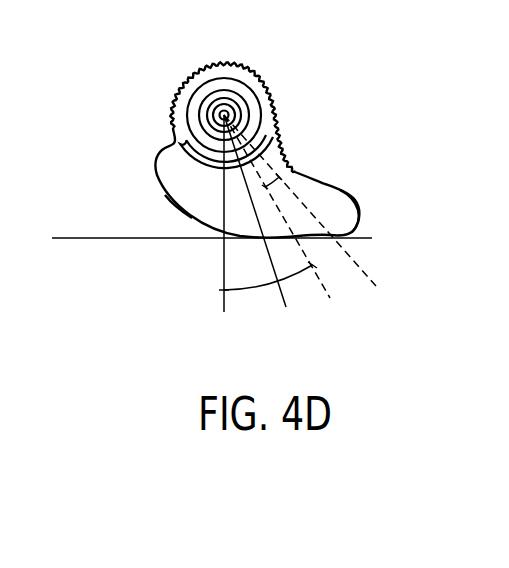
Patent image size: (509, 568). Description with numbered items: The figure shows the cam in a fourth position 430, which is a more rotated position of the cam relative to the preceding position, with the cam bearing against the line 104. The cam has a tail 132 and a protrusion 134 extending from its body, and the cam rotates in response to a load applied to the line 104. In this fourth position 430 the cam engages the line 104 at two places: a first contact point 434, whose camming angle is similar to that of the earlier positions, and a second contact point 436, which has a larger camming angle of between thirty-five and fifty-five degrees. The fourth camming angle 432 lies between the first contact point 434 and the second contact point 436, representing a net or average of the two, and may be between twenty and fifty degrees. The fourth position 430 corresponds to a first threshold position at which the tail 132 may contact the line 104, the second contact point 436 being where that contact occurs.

The line 104 is at (98, 238).
The tail 132 is at (362, 212).
The protrusion 134 is at (178, 209).
The fourth position 430 is at (345, 105).
The fourth camming angle 432 is at (266, 290).
The first contact point 434 is at (263, 240).
The second contact point 436 is at (338, 240).